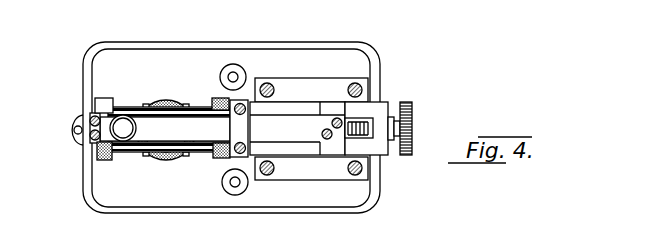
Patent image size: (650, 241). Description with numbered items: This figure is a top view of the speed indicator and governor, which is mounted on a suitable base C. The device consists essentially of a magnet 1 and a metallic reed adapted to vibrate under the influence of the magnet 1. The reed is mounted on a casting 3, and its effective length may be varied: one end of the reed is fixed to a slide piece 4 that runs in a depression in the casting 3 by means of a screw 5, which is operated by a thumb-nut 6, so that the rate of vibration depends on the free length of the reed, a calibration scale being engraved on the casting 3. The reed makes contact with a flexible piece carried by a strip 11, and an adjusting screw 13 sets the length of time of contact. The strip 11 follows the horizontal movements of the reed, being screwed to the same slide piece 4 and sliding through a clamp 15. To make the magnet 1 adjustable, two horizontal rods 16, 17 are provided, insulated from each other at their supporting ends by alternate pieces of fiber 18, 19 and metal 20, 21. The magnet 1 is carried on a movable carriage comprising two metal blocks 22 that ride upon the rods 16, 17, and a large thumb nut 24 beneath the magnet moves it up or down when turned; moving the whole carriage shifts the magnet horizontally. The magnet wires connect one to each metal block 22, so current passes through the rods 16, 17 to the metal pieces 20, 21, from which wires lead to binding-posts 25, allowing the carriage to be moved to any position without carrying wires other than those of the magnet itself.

The base C is at (352, 58).
The magnet 1 is at (166, 100).
The casting 3 is at (383, 158).
The slide piece 4 is at (338, 110).
The screw 5 is at (363, 122).
The thumb-nut 6 is at (410, 110).
The strip 11 is at (205, 234).
The adjusting screw 13 is at (124, 126).
The clamp 15 is at (237, 133).
The horizontal rod 16 is at (122, 150).
The horizontal rod 17 is at (195, 107).
The fiber piece 18 is at (224, 100).
The fiber piece 19 is at (97, 149).
The metal piece 20 is at (244, 160).
The metal piece 21 is at (101, 103).
The metal block 22 is at (134, 150).
The thumb nut 24 is at (152, 152).
The binding-post 25 is at (240, 68).